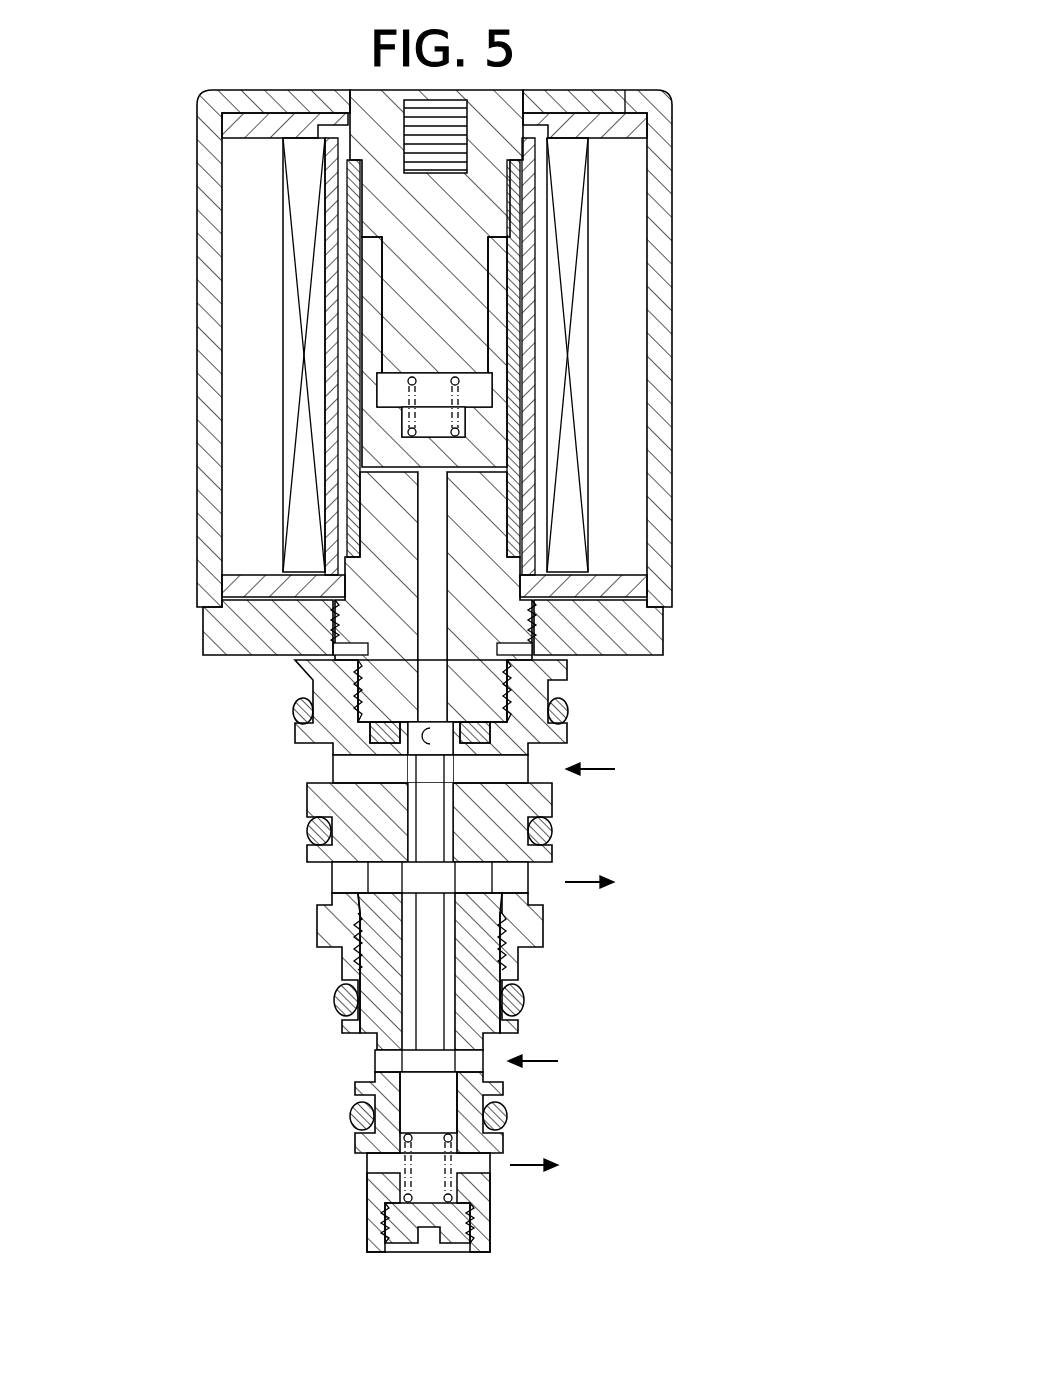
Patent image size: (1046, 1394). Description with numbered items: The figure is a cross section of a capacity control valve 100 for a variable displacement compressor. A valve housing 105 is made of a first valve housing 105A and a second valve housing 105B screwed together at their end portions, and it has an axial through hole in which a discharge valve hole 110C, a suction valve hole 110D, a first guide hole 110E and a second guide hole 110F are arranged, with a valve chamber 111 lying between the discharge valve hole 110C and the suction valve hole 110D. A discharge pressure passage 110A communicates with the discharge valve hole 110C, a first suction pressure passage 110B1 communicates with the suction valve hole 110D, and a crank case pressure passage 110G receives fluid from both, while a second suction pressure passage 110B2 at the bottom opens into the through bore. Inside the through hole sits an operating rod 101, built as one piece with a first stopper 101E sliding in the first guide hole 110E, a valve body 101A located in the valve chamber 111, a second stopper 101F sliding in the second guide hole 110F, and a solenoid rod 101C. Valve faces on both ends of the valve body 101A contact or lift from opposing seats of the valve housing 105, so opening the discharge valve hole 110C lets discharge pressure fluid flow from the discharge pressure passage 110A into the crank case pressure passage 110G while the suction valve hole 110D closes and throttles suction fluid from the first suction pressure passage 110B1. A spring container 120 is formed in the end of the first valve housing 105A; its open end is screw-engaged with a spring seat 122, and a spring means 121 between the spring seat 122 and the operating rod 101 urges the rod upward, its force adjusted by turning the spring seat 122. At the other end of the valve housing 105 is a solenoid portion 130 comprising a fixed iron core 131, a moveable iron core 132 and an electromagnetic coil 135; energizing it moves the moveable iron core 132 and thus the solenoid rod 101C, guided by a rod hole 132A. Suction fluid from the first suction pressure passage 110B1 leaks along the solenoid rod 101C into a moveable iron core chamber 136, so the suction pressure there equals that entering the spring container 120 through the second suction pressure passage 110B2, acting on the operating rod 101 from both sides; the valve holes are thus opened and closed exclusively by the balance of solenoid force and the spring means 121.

The capacity control valve 100 is at (716, 110).
The solenoid portion 130 is at (672, 225).
The electromagnetic coil 135 is at (302, 199).
The moveable iron core chamber 136 is at (393, 388).
The fixed iron core 131 is at (375, 438).
The solenoid rod 101C is at (442, 498).
The rod hole 132A is at (428, 544).
The moveable iron core 132 is at (372, 625).
The second stopper 101F is at (440, 730).
The first suction pressure passage 110B1 is at (525, 766).
The second guide hole 110F is at (413, 768).
The suction valve hole 110D is at (405, 802).
The second valve housing 105B is at (510, 820).
The crank case pressure passage 110G is at (362, 858).
The valve body 101A is at (412, 881).
The valve chamber 111 is at (522, 895).
The operating rod 101 is at (430, 932).
The valve housing 105 is at (540, 932).
The discharge valve hole 110C is at (450, 978).
The first valve housing 105A is at (512, 1030).
The discharge pressure passage 110A is at (380, 1058).
The first stopper 101E is at (423, 1090).
The first guide hole 110E is at (378, 1140).
The spring means 121 is at (455, 1140).
The second suction pressure passage 110B2 is at (478, 1167).
The spring seat 122 is at (403, 1223).
The spring container 120 is at (452, 1217).